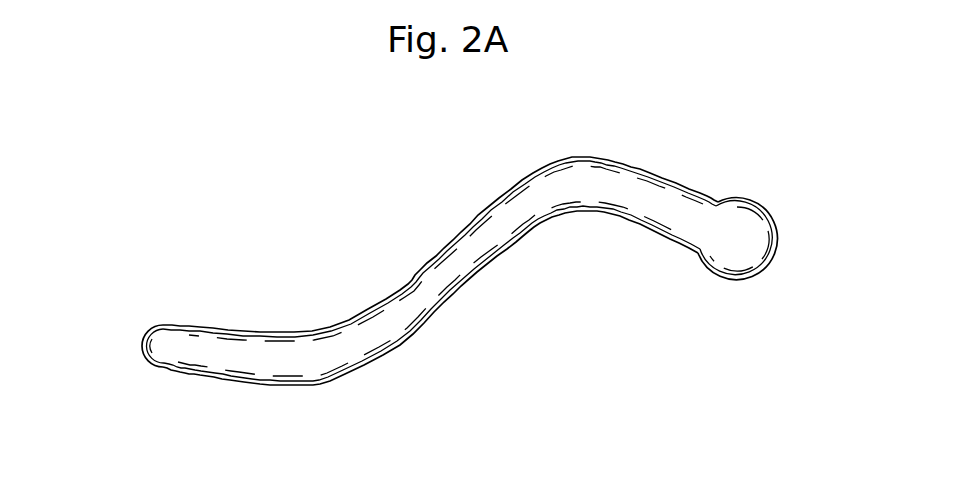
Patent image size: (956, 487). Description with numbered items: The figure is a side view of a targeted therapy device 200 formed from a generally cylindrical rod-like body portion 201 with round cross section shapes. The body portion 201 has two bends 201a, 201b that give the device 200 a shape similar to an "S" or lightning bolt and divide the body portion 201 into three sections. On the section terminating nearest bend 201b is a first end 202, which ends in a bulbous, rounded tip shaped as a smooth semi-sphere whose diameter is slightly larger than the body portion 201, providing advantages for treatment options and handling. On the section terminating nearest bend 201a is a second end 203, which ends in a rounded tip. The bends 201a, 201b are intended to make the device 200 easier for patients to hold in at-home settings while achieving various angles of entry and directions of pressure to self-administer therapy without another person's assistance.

The targeted therapy device 200 is at (364, 191).
The body portion 201 is at (254, 315).
The bend 201a is at (364, 396).
The bend 201b is at (560, 147).
The first end 202 is at (804, 260).
The second end 203 is at (121, 347).